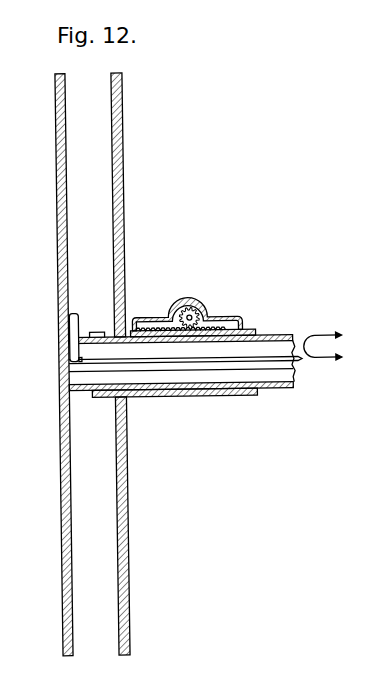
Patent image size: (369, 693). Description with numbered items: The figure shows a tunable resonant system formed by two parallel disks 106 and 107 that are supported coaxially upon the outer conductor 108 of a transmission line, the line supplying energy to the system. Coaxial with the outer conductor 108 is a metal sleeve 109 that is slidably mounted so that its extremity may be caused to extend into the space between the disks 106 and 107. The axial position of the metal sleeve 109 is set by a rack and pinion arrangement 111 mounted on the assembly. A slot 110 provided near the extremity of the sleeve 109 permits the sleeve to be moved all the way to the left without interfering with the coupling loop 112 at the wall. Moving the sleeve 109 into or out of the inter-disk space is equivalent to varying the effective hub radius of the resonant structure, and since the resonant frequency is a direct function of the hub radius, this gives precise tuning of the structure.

The parallel disk 106 is at (58, 141).
The parallel disk 107 is at (126, 138).
The outer conductor 108 is at (76, 392).
The metal sleeve 109 is at (129, 338).
The slot 110 is at (97, 332).
The rack and pinion arrangement 111 is at (212, 313).
The coupling loop 112 is at (78, 312).